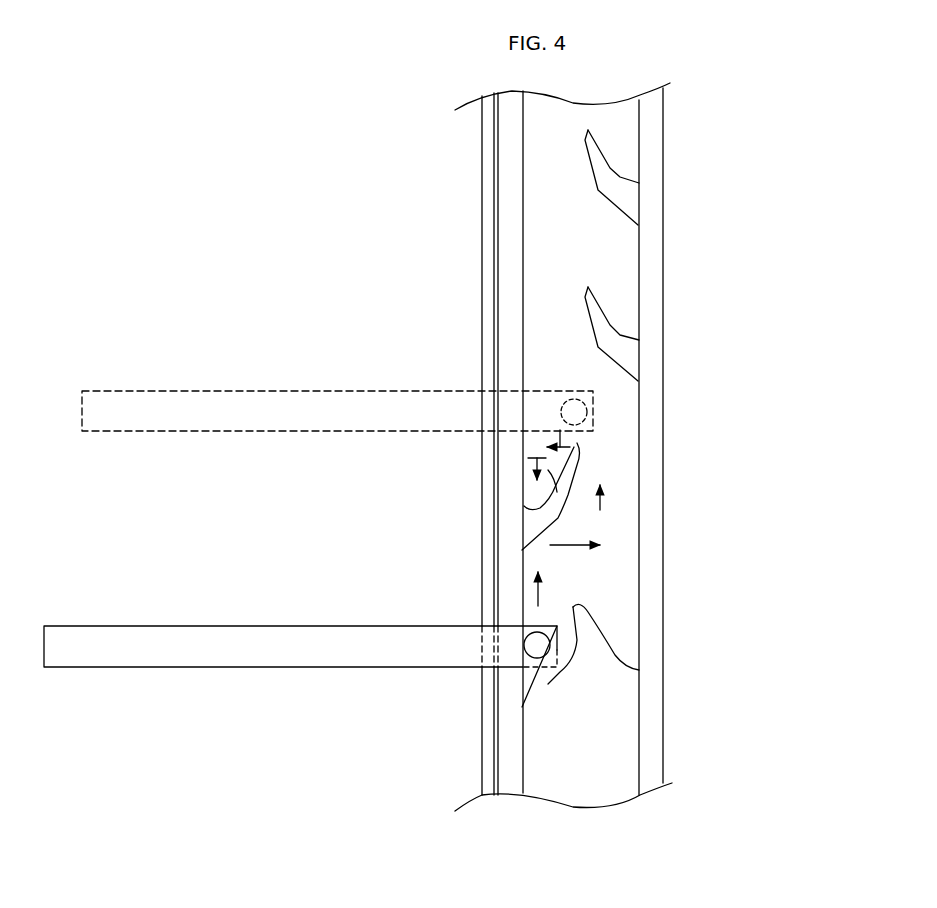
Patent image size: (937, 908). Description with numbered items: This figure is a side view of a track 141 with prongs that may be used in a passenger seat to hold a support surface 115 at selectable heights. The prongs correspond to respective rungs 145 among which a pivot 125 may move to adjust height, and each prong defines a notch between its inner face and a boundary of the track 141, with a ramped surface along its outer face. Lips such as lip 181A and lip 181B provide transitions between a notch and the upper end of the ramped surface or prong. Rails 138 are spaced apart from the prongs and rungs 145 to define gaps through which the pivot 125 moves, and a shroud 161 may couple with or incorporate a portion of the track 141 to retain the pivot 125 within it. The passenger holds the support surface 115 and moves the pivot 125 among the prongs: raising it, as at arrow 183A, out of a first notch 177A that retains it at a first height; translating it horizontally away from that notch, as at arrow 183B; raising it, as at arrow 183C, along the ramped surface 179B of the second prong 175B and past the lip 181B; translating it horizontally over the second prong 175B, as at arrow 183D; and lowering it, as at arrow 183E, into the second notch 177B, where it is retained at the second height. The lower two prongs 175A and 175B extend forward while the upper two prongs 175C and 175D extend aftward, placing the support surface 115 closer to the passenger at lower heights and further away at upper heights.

The support surface 115 is at (100, 628).
The pivot 125 is at (544, 655).
The rail 138 is at (508, 773).
The track 141 is at (573, 820).
The rung 145 is at (685, 150).
The shroud 161 is at (480, 172).
The prong 175A is at (535, 678).
The second prong 175B is at (545, 515).
The prong 175C is at (635, 356).
The prong 175D is at (625, 190).
The first notch 177A is at (556, 604).
The second notch 177B is at (548, 510).
The ramped surface 179B is at (572, 496).
The lip 181A is at (639, 667).
The lip 181B is at (577, 450).
The arrow 183A is at (537, 604).
The arrow 183B is at (568, 546).
The arrow 183C is at (603, 505).
The arrow 183D is at (560, 440).
The arrow 183E is at (528, 462).